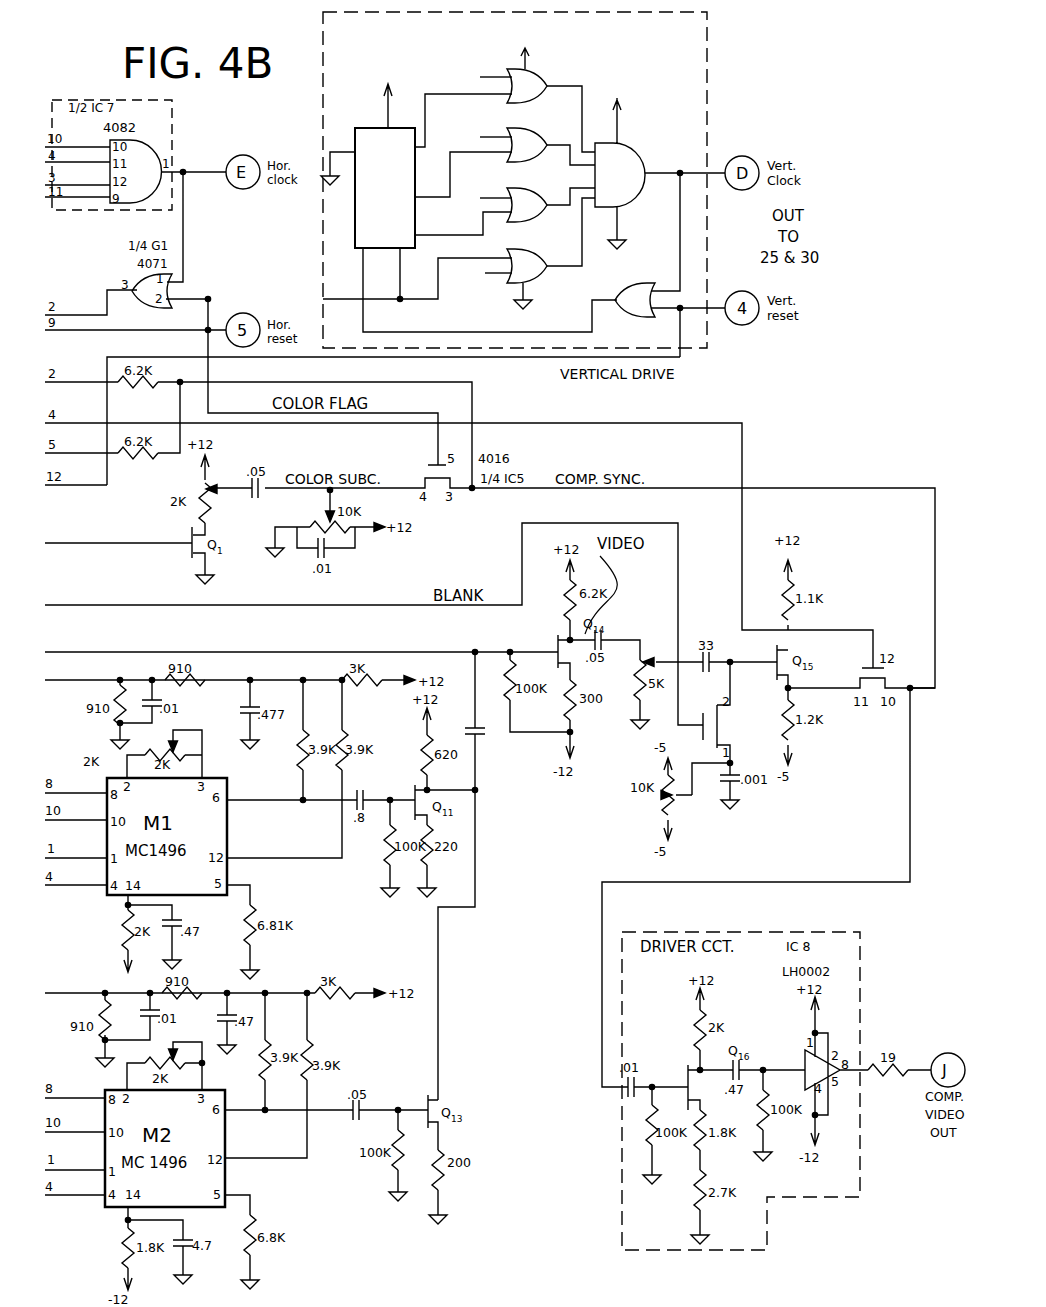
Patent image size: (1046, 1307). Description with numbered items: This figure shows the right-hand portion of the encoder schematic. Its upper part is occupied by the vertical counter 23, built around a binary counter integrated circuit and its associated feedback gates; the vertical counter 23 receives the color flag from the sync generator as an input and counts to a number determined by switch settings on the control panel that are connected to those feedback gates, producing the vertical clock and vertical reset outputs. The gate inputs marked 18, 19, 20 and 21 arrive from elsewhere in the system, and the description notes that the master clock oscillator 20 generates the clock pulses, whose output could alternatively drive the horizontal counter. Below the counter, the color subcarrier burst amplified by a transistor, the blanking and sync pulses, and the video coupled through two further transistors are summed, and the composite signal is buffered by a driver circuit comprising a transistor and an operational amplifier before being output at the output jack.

The vertical counter 23 is at (323, 82).
The flip-flop output 18 input line 18 is at (483, 200).
The flip-flop output 19 input line 19 is at (483, 136).
The master clock oscillator 20 is at (483, 77).
The flip-flop output 21 input line 21 is at (485, 277).